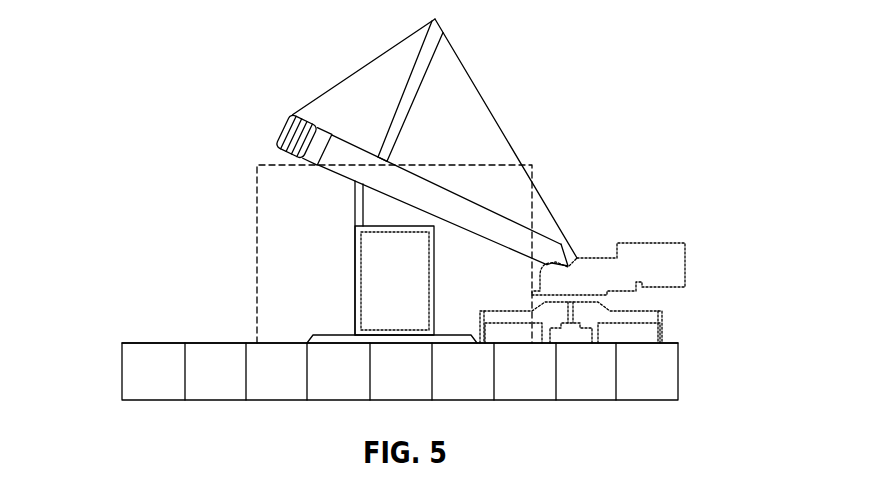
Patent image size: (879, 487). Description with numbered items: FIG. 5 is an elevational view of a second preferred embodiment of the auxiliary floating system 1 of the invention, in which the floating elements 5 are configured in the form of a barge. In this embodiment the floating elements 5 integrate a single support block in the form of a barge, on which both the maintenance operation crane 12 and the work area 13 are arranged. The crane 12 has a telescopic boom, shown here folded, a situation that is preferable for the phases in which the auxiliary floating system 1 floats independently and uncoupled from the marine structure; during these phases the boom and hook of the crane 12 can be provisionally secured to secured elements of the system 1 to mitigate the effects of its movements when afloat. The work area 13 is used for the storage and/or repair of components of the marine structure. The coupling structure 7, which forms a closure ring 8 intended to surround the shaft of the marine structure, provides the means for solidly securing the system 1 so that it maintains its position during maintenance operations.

The auxiliary floating system 1 is at (202, 112).
The floating element 5 is at (658, 375).
The coupling structure 7 is at (355, 253).
The closure ring 8 is at (257, 323).
The maintenance operation crane 12 is at (628, 243).
The work area 13 is at (152, 343).